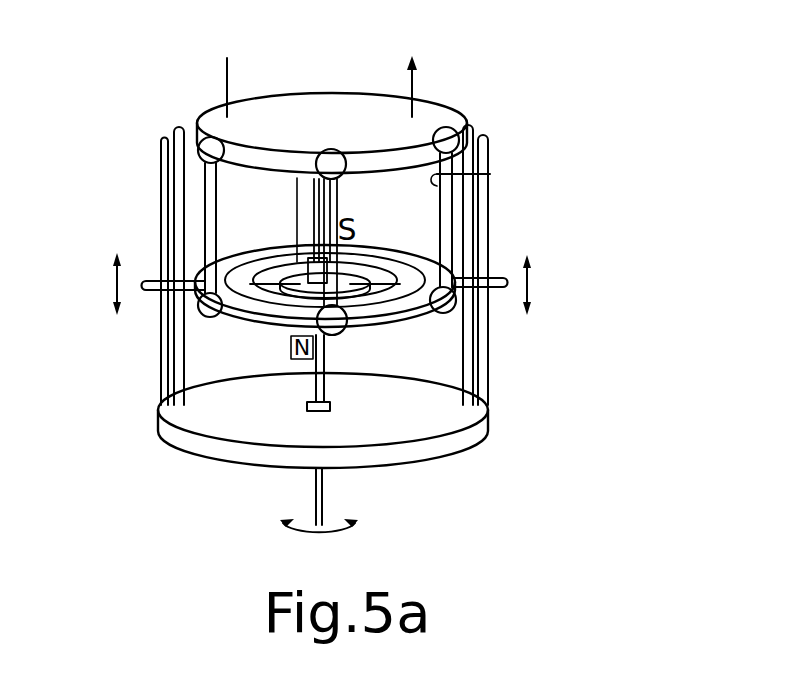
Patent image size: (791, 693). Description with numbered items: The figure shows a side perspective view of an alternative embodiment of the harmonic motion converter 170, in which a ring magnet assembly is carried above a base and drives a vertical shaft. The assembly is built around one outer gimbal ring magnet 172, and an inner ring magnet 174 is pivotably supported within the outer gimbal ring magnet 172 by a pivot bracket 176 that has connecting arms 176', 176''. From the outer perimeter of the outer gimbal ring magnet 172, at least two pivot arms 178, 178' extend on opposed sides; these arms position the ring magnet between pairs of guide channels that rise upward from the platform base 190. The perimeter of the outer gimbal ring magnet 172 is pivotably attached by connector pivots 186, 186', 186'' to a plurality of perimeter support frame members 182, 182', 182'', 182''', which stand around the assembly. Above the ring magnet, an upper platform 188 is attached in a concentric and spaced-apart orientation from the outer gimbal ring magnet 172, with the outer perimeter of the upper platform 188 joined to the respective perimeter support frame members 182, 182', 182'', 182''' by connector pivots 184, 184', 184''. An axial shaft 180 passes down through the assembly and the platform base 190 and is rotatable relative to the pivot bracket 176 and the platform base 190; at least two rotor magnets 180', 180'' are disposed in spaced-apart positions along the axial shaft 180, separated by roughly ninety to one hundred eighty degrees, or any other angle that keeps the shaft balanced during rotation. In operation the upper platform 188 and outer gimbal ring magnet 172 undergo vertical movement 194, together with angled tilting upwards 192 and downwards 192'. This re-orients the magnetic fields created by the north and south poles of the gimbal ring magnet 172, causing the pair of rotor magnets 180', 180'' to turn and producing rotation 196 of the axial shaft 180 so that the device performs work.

The harmonic motion converter 170 is at (590, 124).
The outer gimbal ring magnet 172 is at (400, 312).
The inner ring magnet 174 is at (232, 318).
The pivot bracket 176 is at (313, 184).
The connecting arm 176' is at (198, 230).
The connecting arm 176'' is at (397, 256).
The pivot arm 178 is at (151, 248).
The pivot arm 178' is at (522, 247).
The axial shaft 180 is at (364, 496).
The rotor magnet 180' is at (416, 345).
The rotor magnet 180'' is at (283, 351).
The perimeter support frame member 182 is at (351, 265).
The perimeter support frame member 182' is at (396, 220).
The perimeter support frame member 182'' is at (245, 228).
The perimeter support frame member 182''' is at (263, 220).
The connector pivot 184 is at (482, 112).
The connector pivot 184' is at (352, 117).
The connector pivot 184'' is at (188, 115).
The connector pivot 186 is at (489, 316).
The connector pivot 186' is at (356, 335).
The connector pivot 186'' is at (147, 320).
The upper platform 188 is at (264, 135).
The platform base 190 is at (266, 415).
The angled tilting upwards 192 is at (443, 86).
The angled tilting downwards 192' is at (261, 67).
The vertical movement 194 is at (112, 281).
The rotation 196 is at (352, 538).